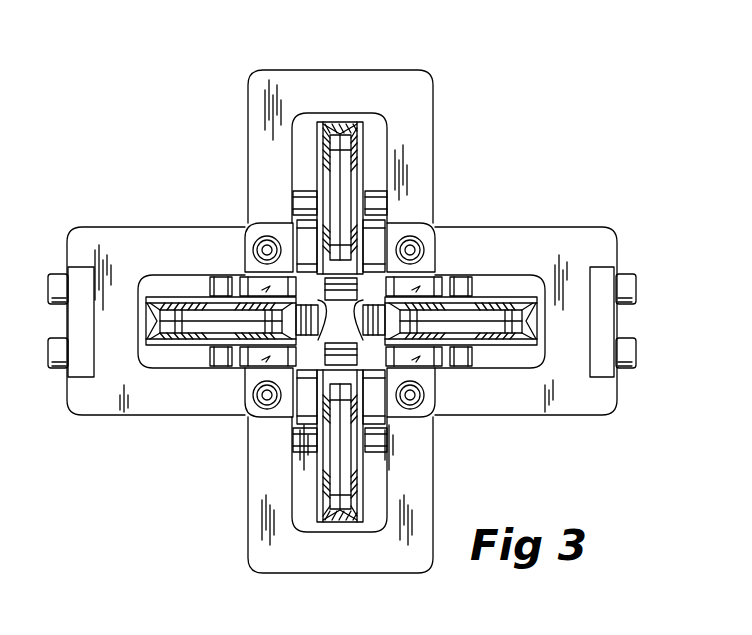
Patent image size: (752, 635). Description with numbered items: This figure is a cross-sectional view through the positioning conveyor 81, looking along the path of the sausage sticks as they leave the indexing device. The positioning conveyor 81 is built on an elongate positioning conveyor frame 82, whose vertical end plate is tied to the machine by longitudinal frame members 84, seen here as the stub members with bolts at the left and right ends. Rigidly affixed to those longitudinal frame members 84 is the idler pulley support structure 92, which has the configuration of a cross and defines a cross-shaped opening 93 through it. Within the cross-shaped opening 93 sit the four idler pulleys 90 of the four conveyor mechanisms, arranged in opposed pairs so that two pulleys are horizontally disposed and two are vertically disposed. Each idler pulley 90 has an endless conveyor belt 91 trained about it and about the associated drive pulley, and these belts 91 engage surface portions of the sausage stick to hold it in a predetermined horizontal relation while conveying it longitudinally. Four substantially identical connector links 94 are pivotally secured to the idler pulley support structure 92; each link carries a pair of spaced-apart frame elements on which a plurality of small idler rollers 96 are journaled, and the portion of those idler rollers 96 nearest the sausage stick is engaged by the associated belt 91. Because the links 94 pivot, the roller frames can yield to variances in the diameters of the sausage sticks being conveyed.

The positioning conveyor 81 is at (128, 187).
The positioning conveyor frame 82 is at (90, 222).
The longitudinal frame members 84 is at (70, 320).
The idler pulley 90 is at (365, 150).
The endless conveyor belt 91 is at (337, 125).
The idler pulley support structure 92 is at (442, 68).
The cross-shaped opening 93 is at (298, 165).
The connector links 94 is at (260, 280).
The idler rollers 96 is at (340, 321).